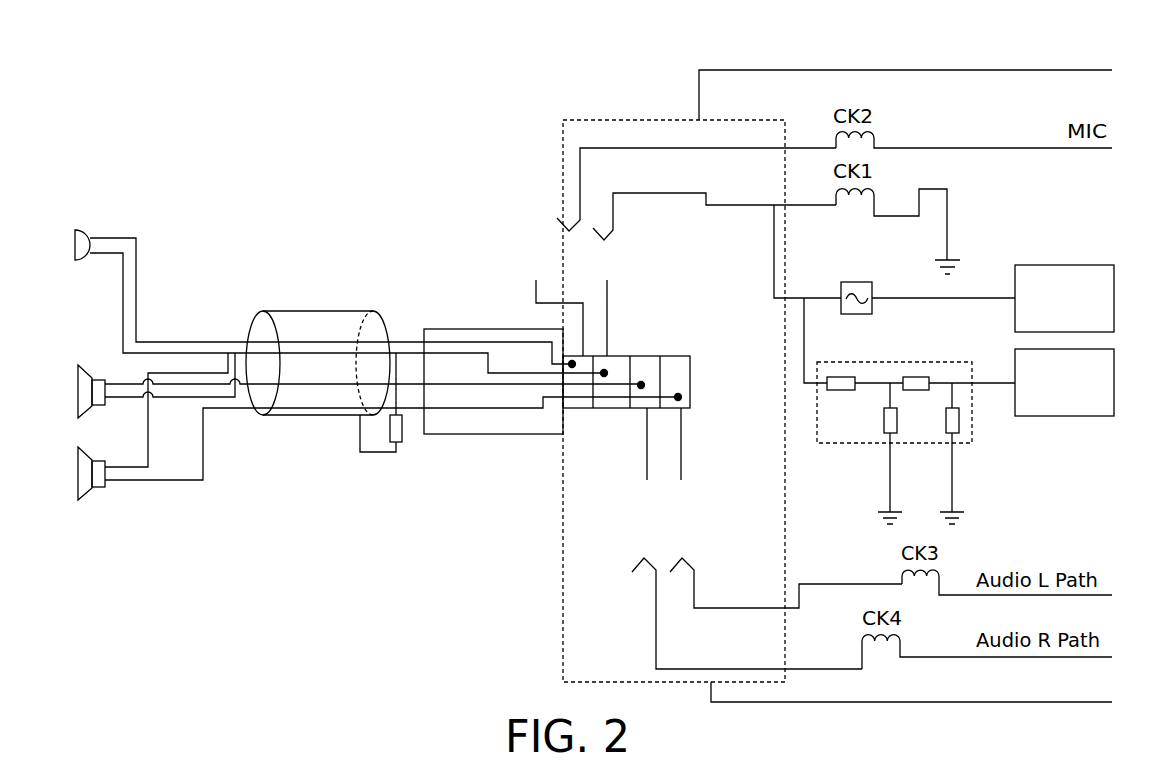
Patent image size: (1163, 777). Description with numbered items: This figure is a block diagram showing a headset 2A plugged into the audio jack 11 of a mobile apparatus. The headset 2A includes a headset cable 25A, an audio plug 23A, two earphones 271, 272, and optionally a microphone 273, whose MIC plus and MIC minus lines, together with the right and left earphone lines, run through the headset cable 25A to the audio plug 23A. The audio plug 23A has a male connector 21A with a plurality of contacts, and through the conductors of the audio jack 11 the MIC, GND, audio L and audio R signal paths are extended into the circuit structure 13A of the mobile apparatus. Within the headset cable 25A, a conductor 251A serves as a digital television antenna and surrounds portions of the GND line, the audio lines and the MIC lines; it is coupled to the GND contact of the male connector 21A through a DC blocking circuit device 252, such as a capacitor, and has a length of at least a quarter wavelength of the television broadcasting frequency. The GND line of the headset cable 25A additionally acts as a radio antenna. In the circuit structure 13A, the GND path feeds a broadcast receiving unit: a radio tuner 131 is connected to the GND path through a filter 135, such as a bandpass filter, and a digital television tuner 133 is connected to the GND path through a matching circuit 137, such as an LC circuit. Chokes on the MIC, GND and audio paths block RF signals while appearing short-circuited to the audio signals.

The headset 2A is at (319, 273).
The microphone 273 is at (58, 247).
The earphone 272 is at (62, 395).
The earphone 271 is at (62, 477).
The headset cable 25A is at (432, 507).
The conductor 251A is at (265, 415).
The circuit device 252 is at (398, 442).
The audio plug 23A is at (493, 434).
The male connector 21A is at (610, 430).
The audio jack 11 is at (787, 487).
The circuit structure 13A is at (905, 70).
The filter 135 is at (858, 282).
The matching circuit 137 is at (910, 362).
The radio tuner 131 is at (1065, 265).
The digital television tuner 133 is at (1065, 416).